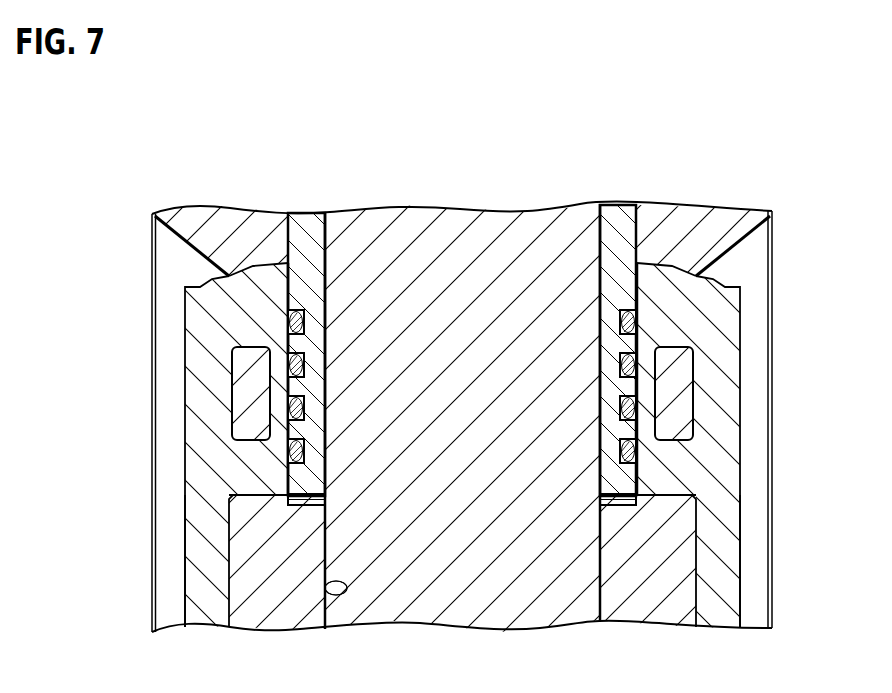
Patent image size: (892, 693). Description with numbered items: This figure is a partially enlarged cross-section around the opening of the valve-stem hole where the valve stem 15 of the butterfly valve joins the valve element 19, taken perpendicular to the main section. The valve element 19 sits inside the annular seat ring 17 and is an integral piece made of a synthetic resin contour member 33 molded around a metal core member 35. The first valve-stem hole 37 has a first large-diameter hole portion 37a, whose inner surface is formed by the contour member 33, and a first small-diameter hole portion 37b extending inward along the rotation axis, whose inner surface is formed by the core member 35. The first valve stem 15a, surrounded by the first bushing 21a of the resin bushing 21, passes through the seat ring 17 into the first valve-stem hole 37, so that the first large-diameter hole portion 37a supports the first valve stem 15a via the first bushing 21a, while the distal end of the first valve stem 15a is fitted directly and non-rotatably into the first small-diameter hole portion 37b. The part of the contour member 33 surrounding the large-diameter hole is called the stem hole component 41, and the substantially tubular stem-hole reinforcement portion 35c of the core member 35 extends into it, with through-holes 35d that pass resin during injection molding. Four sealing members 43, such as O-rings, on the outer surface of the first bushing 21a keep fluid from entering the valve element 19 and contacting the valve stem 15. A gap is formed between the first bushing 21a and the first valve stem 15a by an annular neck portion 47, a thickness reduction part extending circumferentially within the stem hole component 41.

The valve stem 15 is at (490, 235).
The first valve stem 15a is at (462, 385).
The seat ring 17 is at (707, 238).
The valve element 19 is at (752, 306).
The bushing 21 is at (622, 236).
The first bushing 21a is at (534, 325).
The contour member 33 is at (710, 605).
The core member 35 is at (668, 553).
The stem-hole reinforcement portion 35c is at (673, 415).
The through-hole 35d is at (673, 472).
The first valve-stem hole 37 is at (88, 532).
The first large-diameter hole portion 37a is at (292, 505).
The first small-diameter hole portion 37b is at (347, 588).
The stem hole component 41 is at (648, 370).
The sealing member 43 is at (292, 321).
The annular neck portion 47 is at (292, 450).